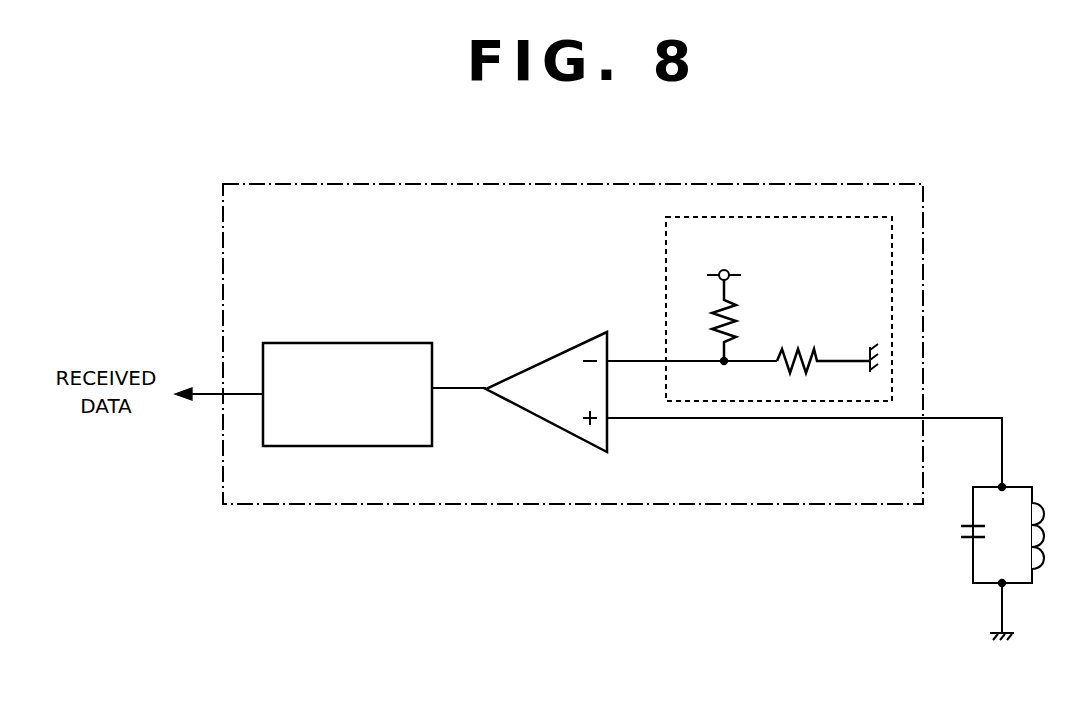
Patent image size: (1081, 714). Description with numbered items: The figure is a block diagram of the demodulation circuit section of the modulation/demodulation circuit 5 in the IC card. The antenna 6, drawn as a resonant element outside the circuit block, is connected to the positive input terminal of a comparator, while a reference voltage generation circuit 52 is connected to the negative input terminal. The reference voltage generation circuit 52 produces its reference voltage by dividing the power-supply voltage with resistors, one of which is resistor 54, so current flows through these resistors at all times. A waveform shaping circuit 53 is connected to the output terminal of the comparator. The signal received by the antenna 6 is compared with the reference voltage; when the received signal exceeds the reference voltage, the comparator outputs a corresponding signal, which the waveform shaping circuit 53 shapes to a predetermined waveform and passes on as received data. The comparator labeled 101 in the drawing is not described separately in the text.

The modulation/demodulation circuit 5 is at (923, 262).
The antenna 6 is at (1010, 487).
The reference voltage generation circuit 52 is at (664, 260).
The waveform shaping circuit 53 is at (328, 343).
The resistor 54 is at (815, 362).
The comparator 101 is at (546, 378).